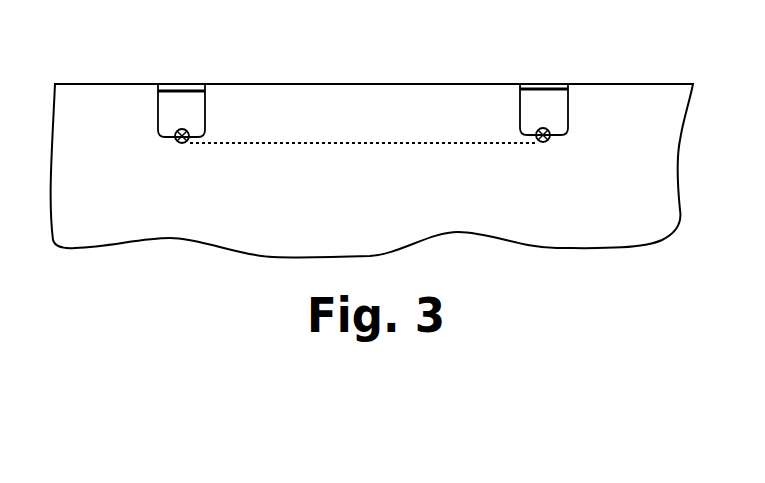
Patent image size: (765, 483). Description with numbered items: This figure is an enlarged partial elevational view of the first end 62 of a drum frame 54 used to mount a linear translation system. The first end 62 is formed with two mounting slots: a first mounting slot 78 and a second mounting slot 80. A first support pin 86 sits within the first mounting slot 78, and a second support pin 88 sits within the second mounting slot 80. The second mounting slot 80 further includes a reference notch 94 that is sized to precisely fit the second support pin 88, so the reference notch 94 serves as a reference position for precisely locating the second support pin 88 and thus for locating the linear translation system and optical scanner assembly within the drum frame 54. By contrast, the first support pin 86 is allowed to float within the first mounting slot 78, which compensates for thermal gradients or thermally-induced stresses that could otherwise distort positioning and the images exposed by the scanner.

The drum frame 54 is at (372, 137).
The first end 62 is at (392, 188).
The first mounting slot 78 is at (566, 109).
The second mounting slot 80 is at (206, 118).
The first support pin 86 is at (545, 143).
The second support pin 88 is at (185, 144).
The reference notch 94 is at (330, 143).